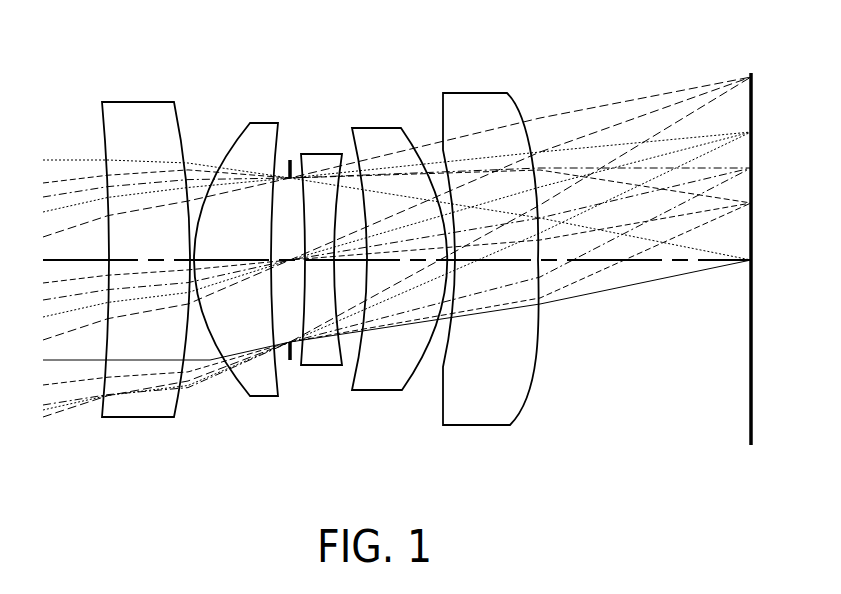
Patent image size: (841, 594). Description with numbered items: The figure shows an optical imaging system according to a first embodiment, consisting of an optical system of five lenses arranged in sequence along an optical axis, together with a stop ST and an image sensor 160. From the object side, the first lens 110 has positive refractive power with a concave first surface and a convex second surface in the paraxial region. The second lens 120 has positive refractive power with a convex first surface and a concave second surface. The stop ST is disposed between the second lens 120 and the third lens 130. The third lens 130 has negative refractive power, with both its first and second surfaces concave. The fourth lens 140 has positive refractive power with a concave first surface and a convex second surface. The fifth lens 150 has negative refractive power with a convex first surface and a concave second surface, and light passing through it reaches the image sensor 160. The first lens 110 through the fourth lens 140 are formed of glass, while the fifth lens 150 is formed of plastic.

The first lens 110 is at (143, 102).
The second lens 120 is at (268, 122).
The third lens 130 is at (325, 154).
The fourth lens 140 is at (387, 128).
The fifth lens 150 is at (482, 92).
The image sensor 160 is at (755, 98).
The stop ST is at (293, 362).